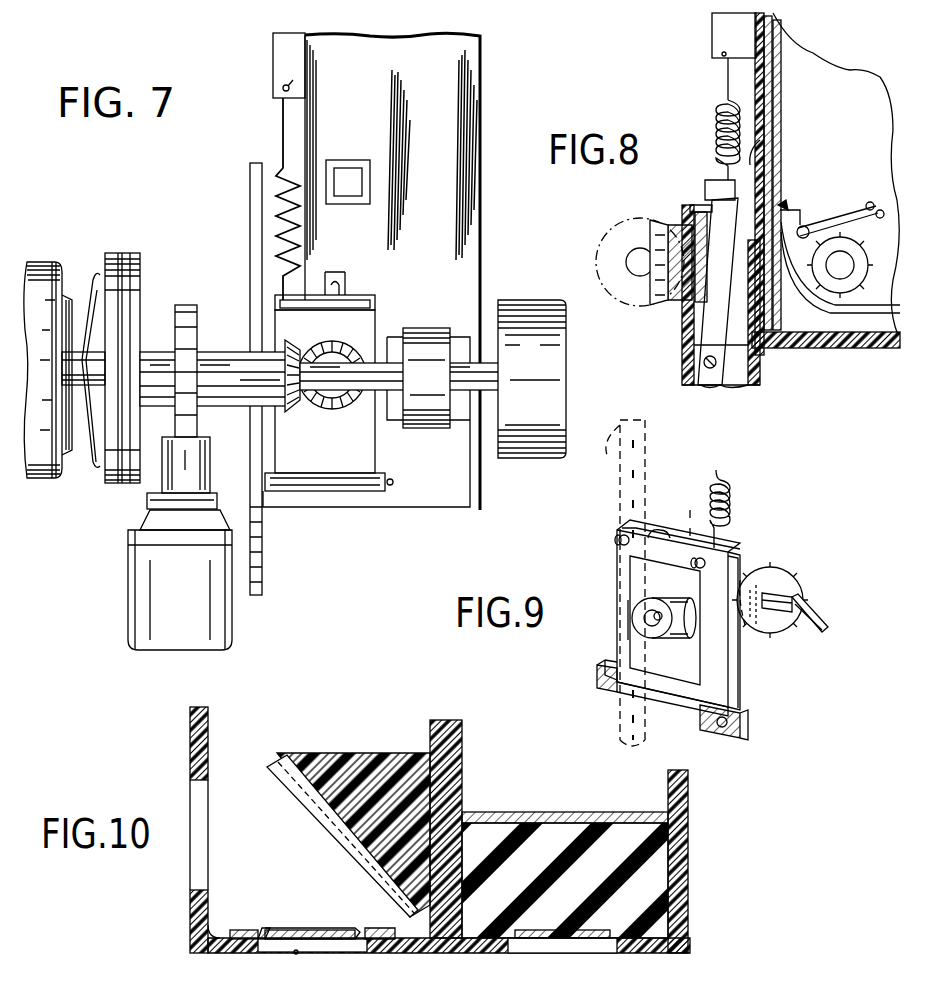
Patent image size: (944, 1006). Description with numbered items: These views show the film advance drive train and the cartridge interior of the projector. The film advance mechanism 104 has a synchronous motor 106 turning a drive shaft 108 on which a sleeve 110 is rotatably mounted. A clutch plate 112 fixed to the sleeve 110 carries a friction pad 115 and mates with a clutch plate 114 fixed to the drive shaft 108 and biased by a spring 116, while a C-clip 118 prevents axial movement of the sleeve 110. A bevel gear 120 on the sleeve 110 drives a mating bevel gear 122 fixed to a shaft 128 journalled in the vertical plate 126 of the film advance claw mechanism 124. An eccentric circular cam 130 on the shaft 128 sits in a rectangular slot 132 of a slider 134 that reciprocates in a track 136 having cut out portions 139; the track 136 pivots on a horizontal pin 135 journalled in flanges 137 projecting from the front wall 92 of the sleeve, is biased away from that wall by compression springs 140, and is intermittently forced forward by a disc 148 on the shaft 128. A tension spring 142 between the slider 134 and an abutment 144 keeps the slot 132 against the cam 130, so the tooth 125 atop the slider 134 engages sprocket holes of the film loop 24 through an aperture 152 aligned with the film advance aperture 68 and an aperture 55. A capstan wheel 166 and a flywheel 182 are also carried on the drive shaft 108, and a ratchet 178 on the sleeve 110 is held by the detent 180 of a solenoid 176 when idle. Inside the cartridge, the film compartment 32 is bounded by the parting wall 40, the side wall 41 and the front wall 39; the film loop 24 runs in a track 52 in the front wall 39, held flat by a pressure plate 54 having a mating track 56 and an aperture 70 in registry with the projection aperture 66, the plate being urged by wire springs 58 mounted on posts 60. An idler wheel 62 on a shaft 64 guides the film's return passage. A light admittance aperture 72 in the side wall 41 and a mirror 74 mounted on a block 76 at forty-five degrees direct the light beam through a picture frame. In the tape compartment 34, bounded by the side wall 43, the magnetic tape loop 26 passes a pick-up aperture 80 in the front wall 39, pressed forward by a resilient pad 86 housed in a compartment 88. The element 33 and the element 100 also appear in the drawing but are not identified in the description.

In FIG. 8, the endless picture film loop 24 is at (771, 105).
In FIG. 9, the endless picture film loop 24 is at (617, 583).
In FIG. 10, the endless picture film loop 24 is at (340, 950).
In FIG. 10, the endless magnetic tape loop 26 is at (570, 952).
In FIG. 8, the film compartment 32 is at (860, 75).
In FIG. 10, the film compartment 32 is at (225, 753).
In FIG. 8, the bar 33 is at (858, 348).
In FIG. 10, the tape compartment 34 is at (638, 800).
In FIG. 8, the front wall 39 is at (754, 73).
In FIG. 10, the front wall 39 is at (420, 950).
In FIG. 10, the parting wall 40 is at (430, 725).
In FIG. 10, the side wall 41 is at (190, 735).
In FIG. 10, the side wall 43 is at (690, 877).
In FIG. 10, the track 52 is at (258, 946).
In FIG. 8, the pressure plate 54 is at (782, 110).
In FIG. 10, the pressure plate 54 is at (240, 930).
In FIG. 8, the aperture 55 is at (766, 192).
In FIG. 10, the mating track 56 is at (258, 928).
In FIG. 8, the wire springs 58 is at (814, 190).
In FIG. 8, the posts 60 is at (840, 208).
In FIG. 8, the idler wheel 62 is at (830, 290).
In FIG. 8, the shaft 64 is at (847, 262).
In FIG. 10, the projection aperture 66 is at (296, 952).
In FIG. 8, the film advance aperture 68 is at (772, 210).
In FIG. 10, the aperture 70 is at (338, 930).
In FIG. 10, the light admittance aperture 72 is at (190, 884).
In FIG. 10, the mirror 74 is at (320, 818).
In FIG. 10, the block 76 is at (374, 760).
In FIG. 10, the pick-up aperture 80 is at (605, 952).
In FIG. 10, the resilient pad 86 is at (642, 910).
In FIG. 10, the compartment 88 is at (690, 842).
In FIG. 8, the front wall 92 is at (752, 100).
In FIG. 7, the bracket 100 is at (256, 238).
In FIG. 7, the film advance mechanism 104 is at (300, 510).
In FIG. 8, the film advance mechanism 104 is at (648, 92).
In FIG. 7, the synchronous motor 106 is at (43, 262).
In FIG. 7, the drive shaft 108 is at (487, 362).
In FIG. 9, the drive shaft 108 is at (818, 621).
In FIG. 7, the sleeve 110 is at (212, 352).
In FIG. 9, the sleeve 110 is at (790, 605).
In FIG. 7, the clutch plate 112 is at (126, 485).
In FIG. 7, the mating clutch plate 114 is at (107, 487).
In FIG. 7, the friction pad 115 is at (127, 253).
In FIG. 7, the spring 116 is at (92, 455).
In FIG. 7, the C-clip 118 is at (318, 412).
In FIG. 7, the bevel gear 120 is at (286, 358).
In FIG. 8, the bevel gear 120 is at (658, 225).
In FIG. 9, the bevel gear 120 is at (798, 578).
In FIG. 7, the mating bevel gear 122 is at (318, 340).
In FIG. 8, the mating bevel gear 122 is at (682, 225).
In FIG. 9, the mating bevel gear 122 is at (755, 568).
In FIG. 8, the film advance claw mechanism 124 is at (678, 352).
In FIG. 9, the film advance claw mechanism 124 is at (775, 702).
In FIG. 8, the tooth 125 is at (745, 180).
In FIG. 9, the tooth 125 is at (648, 535).
In FIG. 8, the vertical plate 126 is at (682, 322).
In FIG. 9, the vertical plate 126 is at (748, 720).
In FIG. 8, the shaft 128 is at (640, 247).
In FIG. 9, the shaft 128 is at (648, 620).
In FIG. 8, the circular cam 130 is at (668, 300).
In FIG. 9, the circular cam 130 is at (668, 600).
In FIG. 9, the rectangular slot 132 is at (632, 568).
In FIG. 9, the slider 134 is at (628, 527).
In FIG. 7, the horizontal pin 135 is at (393, 482).
In FIG. 8, the horizontal pin 135 is at (712, 370).
In FIG. 9, the horizontal pin 135 is at (726, 728).
In FIG. 8, the track 136 is at (755, 356).
In FIG. 9, the track 136 is at (722, 675).
In FIG. 8, the flanges 137 is at (738, 392).
In FIG. 9, the flanges 137 is at (740, 725).
In FIG. 9, the cut out portions 139 is at (630, 612).
In FIG. 9, the helical coil compression springs 140 is at (620, 542).
In FIG. 7, the tension spring 142 is at (283, 175).
In FIG. 8, the tension spring 142 is at (720, 127).
In FIG. 9, the tension spring 142 is at (730, 500).
In FIG. 7, the abutment 144 is at (273, 47).
In FIG. 8, the abutment 144 is at (718, 30).
In FIG. 8, the disc 148 is at (716, 220).
In FIG. 8, the aperture 152 is at (752, 158).
In FIG. 7, the capstan wheel 166 is at (430, 333).
In FIG. 7, the solenoid 176 is at (232, 625).
In FIG. 7, the ratchet 178 is at (172, 315).
In FIG. 7, the detent 180 is at (205, 465).
In FIG. 7, the flywheel 182 is at (530, 440).